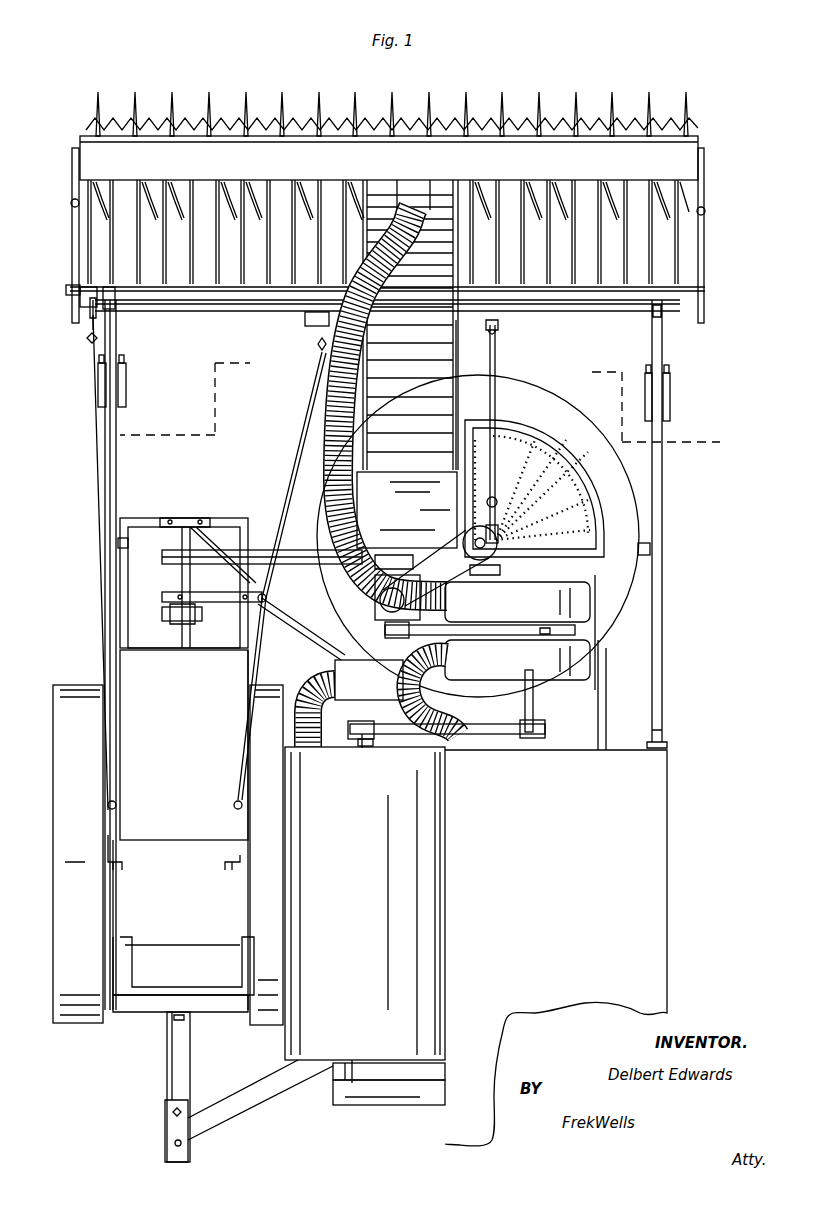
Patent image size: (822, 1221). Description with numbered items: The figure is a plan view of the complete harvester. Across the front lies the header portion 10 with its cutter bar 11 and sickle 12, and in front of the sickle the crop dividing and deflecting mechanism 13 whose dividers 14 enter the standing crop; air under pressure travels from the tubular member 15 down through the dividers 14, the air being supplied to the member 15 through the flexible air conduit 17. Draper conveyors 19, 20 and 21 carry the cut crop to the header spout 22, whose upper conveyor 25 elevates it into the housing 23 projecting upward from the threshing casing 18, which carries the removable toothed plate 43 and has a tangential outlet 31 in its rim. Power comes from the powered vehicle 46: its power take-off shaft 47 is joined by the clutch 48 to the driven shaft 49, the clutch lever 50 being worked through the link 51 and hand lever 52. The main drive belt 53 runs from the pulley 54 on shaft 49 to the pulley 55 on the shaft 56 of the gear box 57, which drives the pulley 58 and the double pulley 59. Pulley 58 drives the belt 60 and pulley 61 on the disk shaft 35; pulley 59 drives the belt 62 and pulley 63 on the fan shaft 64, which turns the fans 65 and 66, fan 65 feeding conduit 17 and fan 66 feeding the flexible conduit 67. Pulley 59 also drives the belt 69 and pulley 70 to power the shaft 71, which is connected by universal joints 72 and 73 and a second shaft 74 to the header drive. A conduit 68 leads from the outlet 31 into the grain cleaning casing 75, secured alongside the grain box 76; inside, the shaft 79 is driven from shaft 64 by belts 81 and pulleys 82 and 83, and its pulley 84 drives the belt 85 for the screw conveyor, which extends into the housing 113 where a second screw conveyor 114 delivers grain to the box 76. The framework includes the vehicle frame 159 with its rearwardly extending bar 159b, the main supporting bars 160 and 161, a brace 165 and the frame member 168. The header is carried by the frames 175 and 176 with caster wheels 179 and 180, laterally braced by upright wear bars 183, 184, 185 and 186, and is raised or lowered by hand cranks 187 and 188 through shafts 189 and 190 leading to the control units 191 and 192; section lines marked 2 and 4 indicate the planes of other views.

The header portion 10 is at (73, 156).
The cutter bar 11 is at (86, 140).
The sickle 12 is at (100, 124).
The crop dividing and deflecting mechanism 13 is at (232, 138).
The dividers 14 is at (242, 116).
The tubular member 15 is at (408, 171).
The flexible air conduit 17 is at (335, 348).
The threshing casing 18 is at (548, 408).
The draper conveyor 19 is at (242, 251).
The draper conveyor 20 is at (520, 246).
The draper conveyor 21 is at (430, 265).
The header spout 22 is at (458, 351).
The housing 23 is at (414, 506).
The upper conveyor 25 is at (416, 363).
The tangential outlet 31 is at (372, 690).
The shaft 35 is at (498, 530).
The plate 43 is at (575, 492).
The powered vehicle 46 is at (181, 741).
The power take-off shaft 47 is at (182, 634).
The clutch 48 is at (162, 612).
The driven shaft 49 is at (182, 575).
The clutch lever 50 is at (230, 602).
The link 51 is at (245, 655).
The hand lever 52 is at (245, 872).
The main drive belt 53 is at (262, 560).
The pulley 54 is at (165, 553).
The pulley 55 is at (380, 555).
The shaft 56 is at (415, 569).
The gear box 57 is at (375, 600).
The pulley 58 is at (382, 608).
The double pulley 59 is at (390, 634).
The belt 60 is at (440, 540).
The pulley 61 is at (495, 560).
The belt 62 is at (455, 625).
The pulley 63 is at (550, 631).
The fan shaft 64 is at (540, 645).
The fan 65 is at (536, 610).
The fan 66 is at (528, 666).
The flexible conduit 67 is at (425, 680).
The conduit 68 is at (318, 680).
The belt 69 is at (453, 644).
The pulley 70 is at (482, 644).
The shaft 71 is at (487, 602).
The universal joint 72 is at (487, 500).
The universal joint 73 is at (496, 332).
The second shaft 74 is at (496, 404).
The grain cleaning casing 75 is at (366, 893).
The grain box 76 is at (552, 898).
The shaft 79 is at (362, 748).
The belts 81 is at (466, 732).
The pulley 82 is at (526, 724).
The pulley 83 is at (384, 716).
The pulley 84 is at (375, 746).
The belt 85 is at (374, 742).
The housing 113 is at (340, 1078).
The second screw conveyor 114 is at (400, 1098).
The vehicle frame 159 is at (146, 518).
The rearwardly extending bar 159b is at (168, 1130).
The main supporting bar 160 is at (292, 612).
The main supporting bar 161 is at (266, 1086).
The brace 165 is at (185, 1060).
The frame member 168 is at (600, 712).
The frame 175 is at (118, 464).
The frame 176 is at (664, 484).
The caster wheel 179 is at (127, 395).
The caster wheel 180 is at (670, 394).
The upright wear bar 183 is at (118, 542).
The upright wear bar 184 is at (120, 548).
The upright wear bar 185 is at (652, 543).
The upright wear bar 186 is at (652, 558).
The hand crank 187 is at (124, 866).
The hand crank 188 is at (228, 862).
The shaft 189 is at (100, 480).
The shaft 190 is at (312, 416).
The control unit 191 is at (90, 320).
The control unit 192 is at (305, 322).
The section line 2- 2 is at (45, 452).
The section line 4- 4 is at (398, 445).